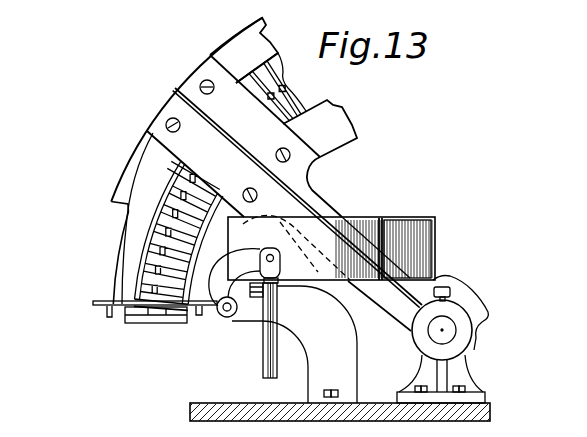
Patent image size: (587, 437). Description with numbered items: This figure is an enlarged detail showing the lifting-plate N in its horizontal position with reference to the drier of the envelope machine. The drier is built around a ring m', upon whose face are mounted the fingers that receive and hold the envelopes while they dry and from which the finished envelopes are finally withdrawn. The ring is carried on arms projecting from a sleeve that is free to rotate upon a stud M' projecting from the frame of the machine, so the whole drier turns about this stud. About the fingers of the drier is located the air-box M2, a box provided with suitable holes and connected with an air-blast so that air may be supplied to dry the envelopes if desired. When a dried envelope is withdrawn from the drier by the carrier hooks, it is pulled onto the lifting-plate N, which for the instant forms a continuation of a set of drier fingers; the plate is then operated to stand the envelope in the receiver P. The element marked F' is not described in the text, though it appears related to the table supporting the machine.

The air-box M2 is at (260, 161).
The ring m' is at (220, 204).
The lifting-plate N is at (96, 308).
The receiver P is at (331, 247).
The stud M' is at (458, 340).
The base frame F' is at (343, 405).